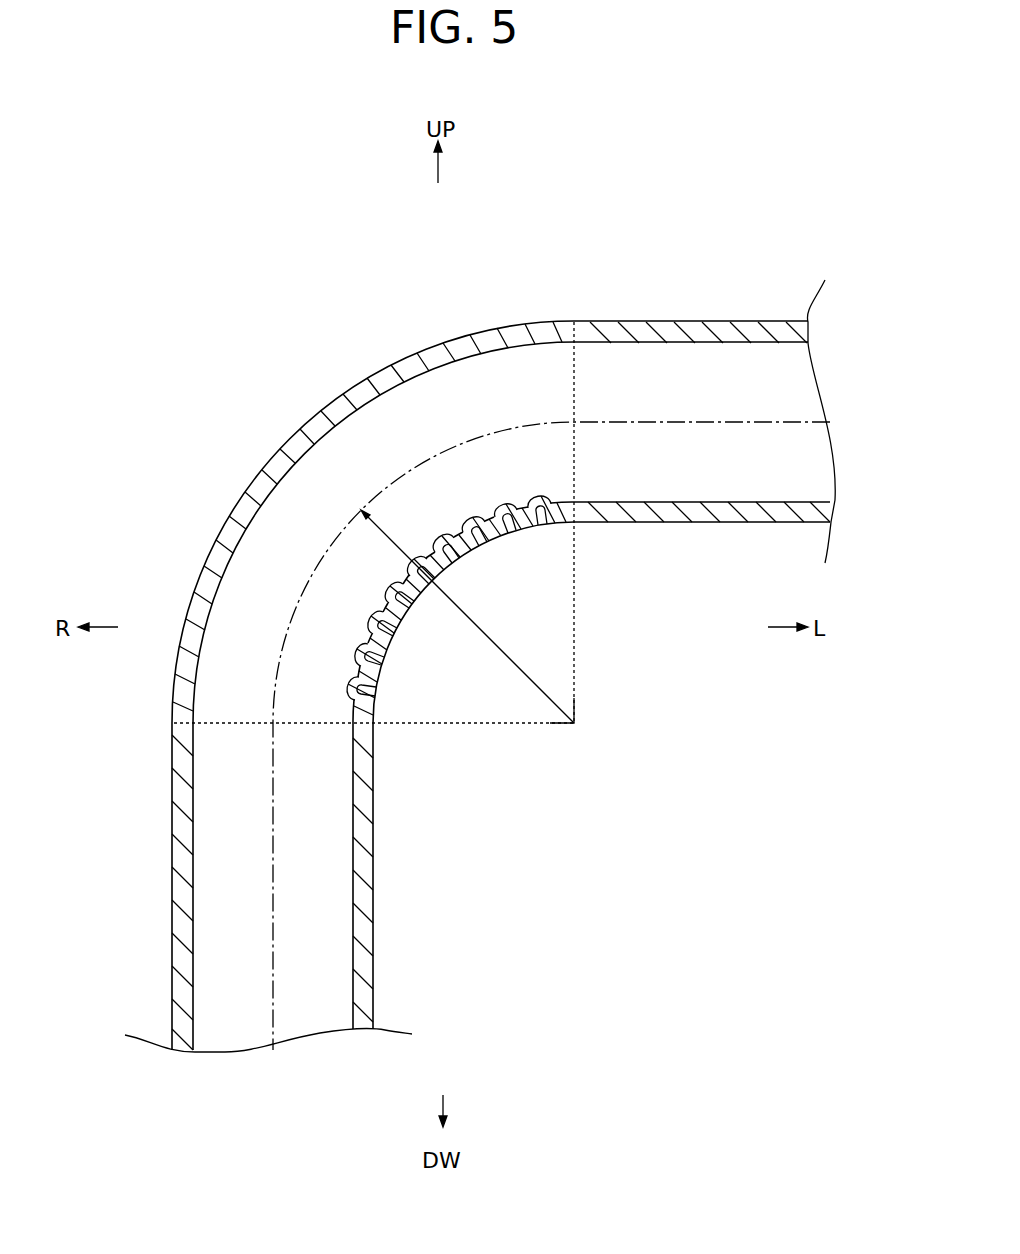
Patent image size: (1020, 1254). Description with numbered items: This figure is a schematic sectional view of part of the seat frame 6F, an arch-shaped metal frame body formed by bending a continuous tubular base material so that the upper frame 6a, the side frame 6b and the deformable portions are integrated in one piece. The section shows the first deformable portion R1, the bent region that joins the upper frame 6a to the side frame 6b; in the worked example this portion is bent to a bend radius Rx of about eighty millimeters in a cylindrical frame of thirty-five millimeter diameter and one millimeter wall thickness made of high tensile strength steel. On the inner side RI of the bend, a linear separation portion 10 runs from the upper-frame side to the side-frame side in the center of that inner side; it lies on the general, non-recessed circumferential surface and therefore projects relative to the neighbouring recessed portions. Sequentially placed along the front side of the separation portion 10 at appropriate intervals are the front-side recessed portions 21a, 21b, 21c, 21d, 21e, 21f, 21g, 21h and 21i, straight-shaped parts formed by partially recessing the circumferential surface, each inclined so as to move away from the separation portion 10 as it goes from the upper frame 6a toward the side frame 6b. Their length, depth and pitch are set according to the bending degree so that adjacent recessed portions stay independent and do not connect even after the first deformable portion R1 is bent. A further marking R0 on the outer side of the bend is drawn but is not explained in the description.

The seat frame 6F is at (554, 240).
The upper frame 6a is at (670, 322).
The side frame 6b is at (171, 916).
The separation portion 10 is at (378, 680).
The front-side recessed portion 21a is at (538, 495).
The front-side recessed portion 21b is at (505, 506).
The front-side recessed portion 21c is at (472, 518).
The front-side recessed portion 21d is at (440, 540).
The front-side recessed portion 21e is at (407, 573).
The front-side recessed portion 21f is at (388, 590).
The front-side recessed portion 21g is at (370, 620).
The front-side recessed portion 21h is at (356, 652).
The front-side recessed portion 21i is at (348, 690).
The outer surface radius of outer wall R0 is at (222, 516).
The first deformable portion R1 is at (308, 422).
The bend radius Rx is at (473, 620).
The inner side RI is at (402, 618).